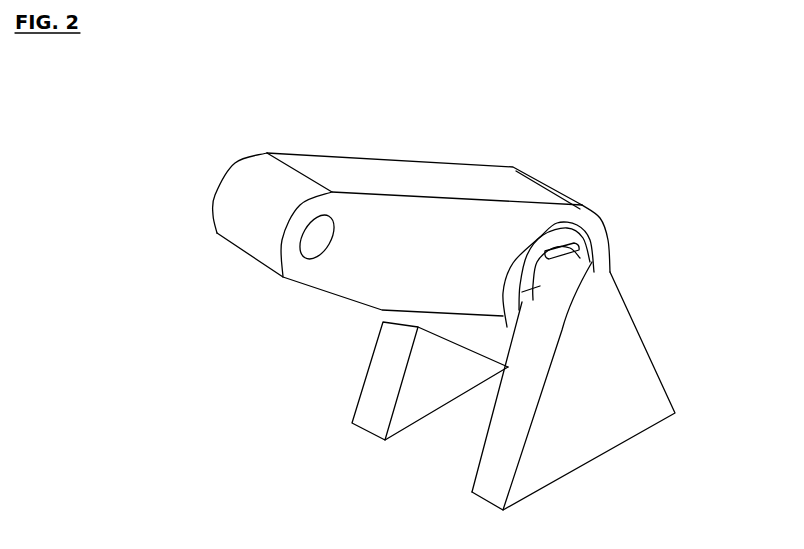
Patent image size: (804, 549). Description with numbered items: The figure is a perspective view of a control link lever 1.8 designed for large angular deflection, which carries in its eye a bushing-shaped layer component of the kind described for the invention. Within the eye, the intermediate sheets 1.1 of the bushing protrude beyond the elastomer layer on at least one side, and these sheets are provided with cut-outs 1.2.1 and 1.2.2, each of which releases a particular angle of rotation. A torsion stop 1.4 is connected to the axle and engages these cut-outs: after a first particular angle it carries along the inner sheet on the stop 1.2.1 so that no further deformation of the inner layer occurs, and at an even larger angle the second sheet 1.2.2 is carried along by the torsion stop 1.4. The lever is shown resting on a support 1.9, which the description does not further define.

The control link lever 1.8 is at (398, 200).
The intermediate sheets 1.1 is at (528, 290).
The cut-out (stop) 1.2.1 is at (528, 287).
The cut-out (second sheet) 1.2.2 is at (560, 314).
The torsion stop 1.4 is at (527, 297).
The stand bracket 1.9 is at (540, 363).